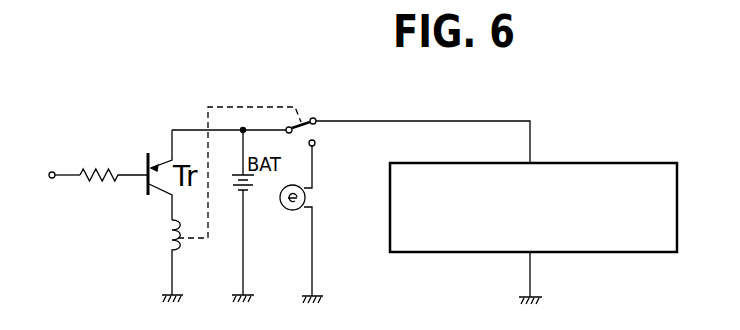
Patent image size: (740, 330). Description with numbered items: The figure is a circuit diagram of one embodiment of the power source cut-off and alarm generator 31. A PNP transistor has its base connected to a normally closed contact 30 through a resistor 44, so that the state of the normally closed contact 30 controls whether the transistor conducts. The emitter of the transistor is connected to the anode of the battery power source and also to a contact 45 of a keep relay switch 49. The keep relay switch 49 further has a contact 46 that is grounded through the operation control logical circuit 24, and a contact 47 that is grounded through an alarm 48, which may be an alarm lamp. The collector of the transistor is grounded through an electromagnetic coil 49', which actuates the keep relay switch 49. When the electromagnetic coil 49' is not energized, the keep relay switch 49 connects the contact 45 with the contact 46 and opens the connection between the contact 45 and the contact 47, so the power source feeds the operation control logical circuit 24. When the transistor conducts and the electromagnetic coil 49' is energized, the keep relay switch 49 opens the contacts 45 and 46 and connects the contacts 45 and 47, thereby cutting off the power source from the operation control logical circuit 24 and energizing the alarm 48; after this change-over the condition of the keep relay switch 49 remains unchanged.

The operation control logical circuit 24 is at (600, 163).
The normally closed contact 30 is at (53, 184).
The power source cut-off and alarm generator 31 is at (177, 121).
The resistor 44 is at (96, 165).
The contact 45 is at (292, 138).
The contact 46 is at (317, 112).
The contact 47 is at (319, 148).
The alarm 48 is at (292, 216).
The keep relay switch 49 is at (239, 152).
The electromagnetic coil 49' is at (144, 257).